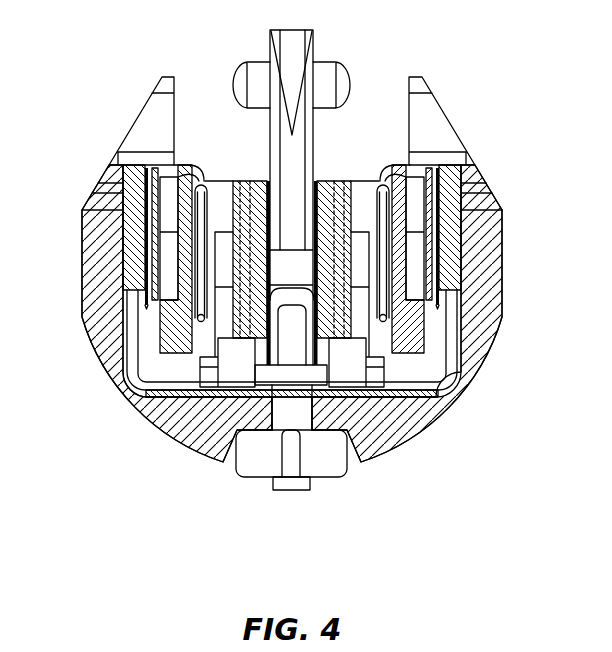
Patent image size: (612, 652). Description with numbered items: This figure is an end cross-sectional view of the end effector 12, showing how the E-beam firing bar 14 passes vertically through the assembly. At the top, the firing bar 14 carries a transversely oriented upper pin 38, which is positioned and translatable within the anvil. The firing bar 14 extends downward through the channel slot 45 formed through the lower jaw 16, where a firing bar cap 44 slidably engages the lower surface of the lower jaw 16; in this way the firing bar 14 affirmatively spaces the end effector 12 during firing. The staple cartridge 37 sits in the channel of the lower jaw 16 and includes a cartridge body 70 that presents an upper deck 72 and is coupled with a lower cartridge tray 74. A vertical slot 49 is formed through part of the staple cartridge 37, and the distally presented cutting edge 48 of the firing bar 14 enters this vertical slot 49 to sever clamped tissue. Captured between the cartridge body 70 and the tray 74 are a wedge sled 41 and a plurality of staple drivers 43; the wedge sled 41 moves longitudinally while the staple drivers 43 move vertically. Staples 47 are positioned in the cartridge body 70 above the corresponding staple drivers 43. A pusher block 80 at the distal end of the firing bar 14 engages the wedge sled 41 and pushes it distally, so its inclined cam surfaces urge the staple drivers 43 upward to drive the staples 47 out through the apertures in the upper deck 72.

The end effector 12 is at (531, 128).
The firing bar 14 is at (318, 133).
The lower jaw 16 is at (504, 342).
The staple cartridge 37 is at (233, 174).
The upper pin 38 is at (331, 80).
The wedge sled 41 is at (301, 435).
The staple driver 43 is at (152, 360).
The firing bar cap 44 is at (253, 463).
The channel slot 45 is at (267, 411).
The staple 47 is at (204, 261).
The cutting edge 48 is at (298, 177).
The vertical slot 49 is at (267, 193).
The cartridge body 70 is at (449, 275).
The upper deck 72 is at (363, 181).
The cartridge tray 74 is at (452, 382).
The pusher block 80 is at (295, 342).